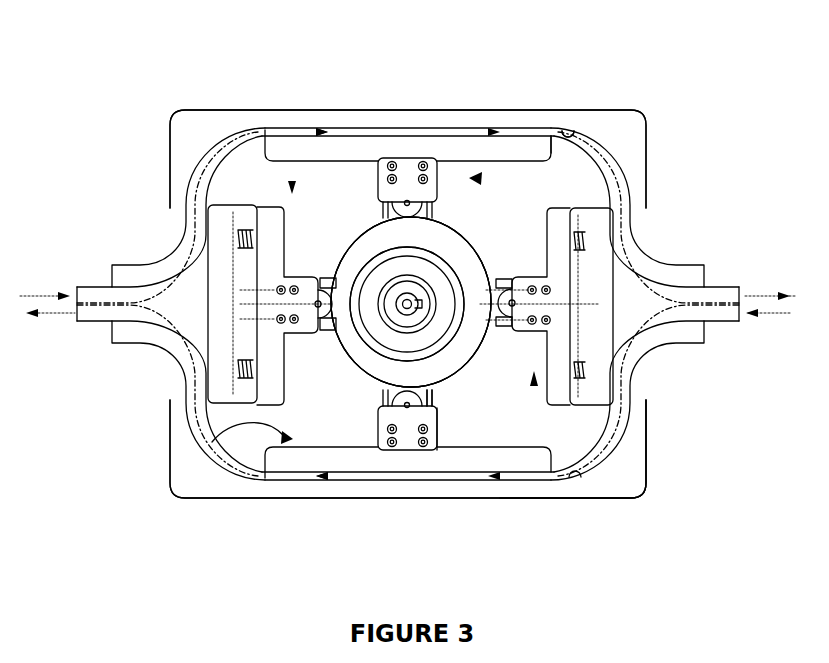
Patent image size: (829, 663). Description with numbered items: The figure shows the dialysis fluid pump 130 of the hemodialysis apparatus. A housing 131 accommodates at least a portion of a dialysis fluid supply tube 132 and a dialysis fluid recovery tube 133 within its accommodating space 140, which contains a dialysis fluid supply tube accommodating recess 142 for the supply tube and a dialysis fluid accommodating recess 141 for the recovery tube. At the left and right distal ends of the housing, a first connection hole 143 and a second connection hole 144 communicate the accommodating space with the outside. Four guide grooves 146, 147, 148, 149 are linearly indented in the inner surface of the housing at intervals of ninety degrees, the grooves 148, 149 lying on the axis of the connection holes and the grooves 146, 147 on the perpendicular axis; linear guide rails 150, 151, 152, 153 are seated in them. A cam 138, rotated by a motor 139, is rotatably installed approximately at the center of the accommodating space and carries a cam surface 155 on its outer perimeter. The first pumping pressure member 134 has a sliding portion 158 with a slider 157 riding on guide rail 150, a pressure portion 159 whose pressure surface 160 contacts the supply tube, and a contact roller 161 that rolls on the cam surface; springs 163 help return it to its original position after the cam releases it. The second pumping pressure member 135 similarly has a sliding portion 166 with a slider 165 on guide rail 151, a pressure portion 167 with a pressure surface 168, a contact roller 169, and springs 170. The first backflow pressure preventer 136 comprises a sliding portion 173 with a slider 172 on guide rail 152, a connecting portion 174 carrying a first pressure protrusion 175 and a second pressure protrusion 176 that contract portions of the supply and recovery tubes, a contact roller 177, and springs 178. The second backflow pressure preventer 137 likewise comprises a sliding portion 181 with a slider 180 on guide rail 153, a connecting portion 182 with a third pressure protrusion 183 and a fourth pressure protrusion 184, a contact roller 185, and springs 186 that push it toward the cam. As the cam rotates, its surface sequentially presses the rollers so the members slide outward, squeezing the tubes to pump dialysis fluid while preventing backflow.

The dialysis fluid pump 130 is at (624, 99).
The housing 131 is at (618, 122).
The dialysis fluid supply tube 132 is at (602, 462).
The dialysis fluid recovery tube 133 is at (596, 150).
The first pumping pressure member 134 is at (262, 468).
The second pumping pressure member 135 is at (480, 180).
The first backflow pressure preventer 136 is at (597, 450).
The second backflow pressure preventer 137 is at (265, 132).
The cam 138 is at (533, 388).
The motor 139 is at (470, 356).
The accommodating space 140 is at (341, 189).
The dialysis fluid accommodating recess 141 is at (583, 133).
The dialysis fluid supply tube accommodating recess 142 is at (578, 478).
The first connection hole 143 is at (713, 323).
The second connection hole 144 is at (112, 323).
The guide groove 146 is at (385, 393).
The guide groove 147 is at (384, 212).
The guide groove 148 is at (580, 388).
The guide groove 149 is at (290, 308).
The linear guide rail 150 is at (443, 363).
The linear guide rail 151 is at (462, 212).
The linear guide rail 152 is at (620, 225).
The linear guide rail 153 is at (237, 370).
The cam surface 155 is at (345, 449).
The slider 157 is at (470, 405).
The sliding portion 158 is at (438, 446).
The pressure portion 159 is at (250, 481).
The pressure surface 160 is at (478, 372).
The contact roller 161 is at (408, 440).
The springs 163 is at (353, 370).
The slider 165 is at (433, 158).
The sliding portion 166 is at (445, 232).
The pressure portion 167 is at (527, 150).
The pressure surface 168 is at (292, 182).
The contact roller 169 is at (408, 160).
The springs 170 is at (322, 127).
The slider 172 is at (517, 318).
The sliding portion 173 is at (600, 303).
The connecting portion 174 is at (590, 405).
The first pressure protrusion 175 is at (578, 412).
The second pressure protrusion 176 is at (605, 198).
The contact roller 177 is at (600, 293).
The springs 178 is at (600, 250).
The slider 180 is at (312, 277).
The sliding portion 181 is at (318, 300).
The connecting portion 182 is at (272, 153).
The third pressure protrusion 183 is at (265, 447).
The fourth pressure protrusion 184 is at (213, 180).
The contact roller 185 is at (328, 300).
The springs 186 is at (208, 402).